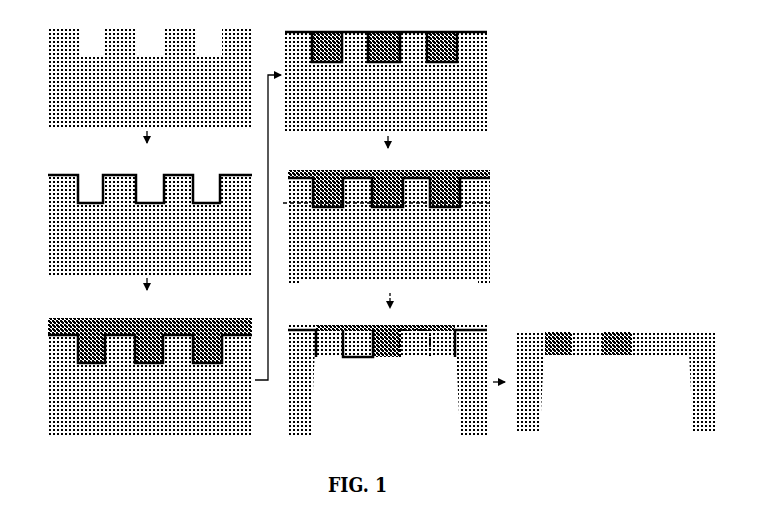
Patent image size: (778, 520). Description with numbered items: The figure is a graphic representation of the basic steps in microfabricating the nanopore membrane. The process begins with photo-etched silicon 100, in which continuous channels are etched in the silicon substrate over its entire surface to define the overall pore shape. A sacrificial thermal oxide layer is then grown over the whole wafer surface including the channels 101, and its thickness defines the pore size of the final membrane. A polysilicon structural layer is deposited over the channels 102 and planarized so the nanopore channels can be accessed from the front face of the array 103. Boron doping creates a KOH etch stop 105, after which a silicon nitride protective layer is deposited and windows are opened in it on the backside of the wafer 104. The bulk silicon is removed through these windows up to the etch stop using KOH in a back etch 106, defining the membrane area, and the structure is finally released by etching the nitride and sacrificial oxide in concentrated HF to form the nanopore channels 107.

The photo-etched silicon 100 is at (150, 77).
The sacrificial oxide deposition 101 is at (146, 214).
The poly silicon deposition 102 is at (150, 368).
The planarize and boron dope 103 is at (390, 71).
The nitride etch stop deposition 104 is at (490, 279).
The etch stop target 105 is at (475, 206).
The back etch 106 is at (417, 372).
The nanopore channels 107 is at (578, 330).